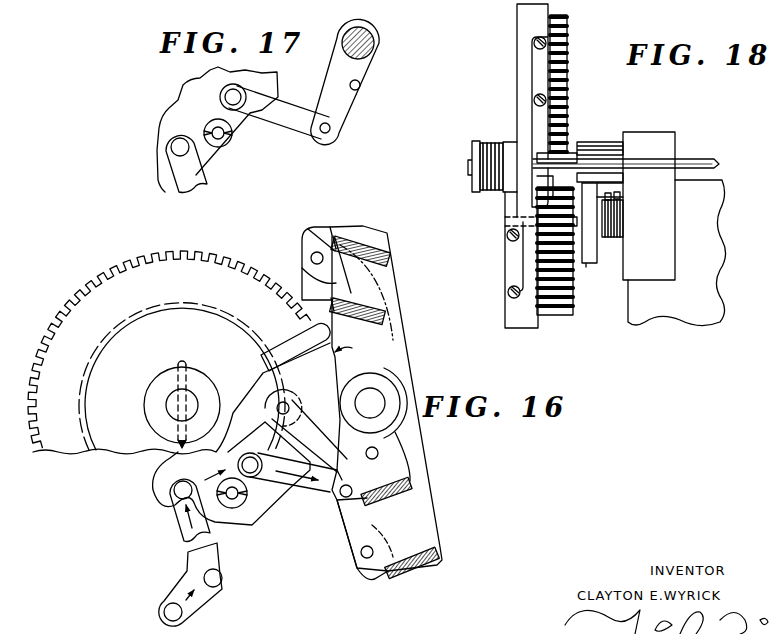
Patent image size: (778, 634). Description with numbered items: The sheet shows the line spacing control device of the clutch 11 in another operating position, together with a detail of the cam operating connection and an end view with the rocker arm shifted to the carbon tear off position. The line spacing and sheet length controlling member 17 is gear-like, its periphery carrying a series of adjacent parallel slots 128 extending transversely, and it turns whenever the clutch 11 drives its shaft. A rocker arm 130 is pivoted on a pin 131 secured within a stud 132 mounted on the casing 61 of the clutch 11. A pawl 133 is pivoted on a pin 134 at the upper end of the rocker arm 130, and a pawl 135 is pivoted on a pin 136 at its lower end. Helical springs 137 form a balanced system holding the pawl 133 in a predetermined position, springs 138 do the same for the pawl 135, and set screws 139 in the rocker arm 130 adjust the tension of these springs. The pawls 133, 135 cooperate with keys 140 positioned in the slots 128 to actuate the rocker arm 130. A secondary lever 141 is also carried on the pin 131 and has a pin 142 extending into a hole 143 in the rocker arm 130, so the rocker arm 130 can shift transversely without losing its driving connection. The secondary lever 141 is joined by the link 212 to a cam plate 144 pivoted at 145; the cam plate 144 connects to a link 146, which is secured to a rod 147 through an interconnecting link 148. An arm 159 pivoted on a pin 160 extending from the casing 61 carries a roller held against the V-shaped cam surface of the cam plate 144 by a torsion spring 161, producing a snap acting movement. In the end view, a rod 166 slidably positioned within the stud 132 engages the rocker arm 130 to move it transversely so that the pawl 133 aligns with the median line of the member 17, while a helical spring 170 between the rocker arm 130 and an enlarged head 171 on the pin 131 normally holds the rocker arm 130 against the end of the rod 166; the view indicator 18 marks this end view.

In FIG. 18, the clutch 11 is at (723, 237).
In FIG. 18, the casing 61 is at (722, 197).
In FIG. 16, the slots 128 is at (146, 259).
In FIG. 16, the rocker arm 130 is at (400, 348).
In FIG. 18, the rocker arm 130 is at (547, 125).
In FIG. 16, the pin 131 is at (376, 402).
In FIG. 18, the pin 131 is at (517, 132).
In FIG. 18, the stud 132 is at (676, 135).
In FIG. 16, the pawl 133 is at (308, 234).
In FIG. 16, the pin 134 is at (311, 259).
In FIG. 16, the pawl 135 is at (346, 528).
In FIG. 16, the pin 136 is at (365, 557).
In FIG. 16, the helical springs 137 is at (335, 237).
In FIG. 16, the springs 138 is at (383, 512).
In FIG. 16, the set screws 139 is at (391, 253).
In FIG. 16, the keys 140 is at (313, 347).
In FIG. 16, the secondary lever 141 is at (338, 488).
In FIG. 17, the secondary lever 141 is at (348, 110).
In FIG. 18, the secondary lever 141 is at (588, 264).
In FIG. 16, the pin 142 is at (350, 485).
In FIG. 17, the pin 142 is at (330, 130).
In FIG. 18, the pin 142 is at (545, 223).
In FIG. 16, the hole 143 is at (379, 453).
In FIG. 17, the hole 143 is at (360, 85).
In FIG. 16, the cam plate 144 is at (273, 504).
In FIG. 17, the cam plate 144 is at (177, 108).
In FIG. 16, the pivot 145 is at (234, 499).
In FIG. 17, the pivot 145 is at (224, 138).
In FIG. 16, the link 146 is at (203, 600).
In FIG. 16, the rod 147 is at (167, 608).
In FIG. 16, the interconnecting link 148 is at (185, 522).
In FIG. 17, the interconnecting link 148 is at (206, 178).
In FIG. 16, the arm 159 is at (323, 411).
In FIG. 16, the pin 160 is at (285, 405).
In FIG. 18, the pin 160 is at (616, 238).
In FIG. 18, the torsion spring 161 is at (622, 241).
In FIG. 18, the rod 166 is at (711, 160).
In FIG. 18, the helical spring 170 is at (489, 144).
In FIG. 18, the enlarged head 171 is at (473, 148).
In FIG. 16, the link 212 is at (268, 460).
In FIG. 17, the link 212 is at (293, 122).
In FIG. 16, the line spacing and sheet length controlling member 17 is at (197, 350).
In FIG. 16, the view line of FIG. 18 is at (408, 224).